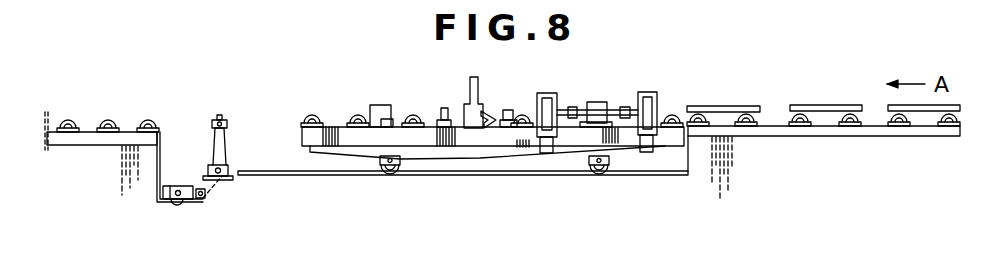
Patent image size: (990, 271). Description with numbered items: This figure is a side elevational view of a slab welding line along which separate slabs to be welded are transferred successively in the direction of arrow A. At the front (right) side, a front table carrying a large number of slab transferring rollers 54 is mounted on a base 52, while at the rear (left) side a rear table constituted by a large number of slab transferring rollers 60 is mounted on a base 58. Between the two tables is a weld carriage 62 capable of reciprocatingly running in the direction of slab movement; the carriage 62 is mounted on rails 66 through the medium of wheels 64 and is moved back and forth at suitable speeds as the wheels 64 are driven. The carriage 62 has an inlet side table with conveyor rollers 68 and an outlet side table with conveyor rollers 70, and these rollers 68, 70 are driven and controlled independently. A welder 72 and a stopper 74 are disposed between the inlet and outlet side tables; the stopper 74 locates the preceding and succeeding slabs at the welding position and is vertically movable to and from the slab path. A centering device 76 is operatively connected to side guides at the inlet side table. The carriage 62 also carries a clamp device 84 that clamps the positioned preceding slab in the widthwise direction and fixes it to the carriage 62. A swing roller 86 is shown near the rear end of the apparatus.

The base 52 is at (760, 135).
The slab transferring rollers 54 is at (702, 107).
The base 58 is at (122, 143).
The slab transferring rollers 60 is at (70, 121).
The weld carriage 62 is at (430, 156).
The wheels 64 is at (381, 172).
The rails 66 is at (297, 170).
The conveyor rollers 68 is at (527, 108).
The conveyor rollers 70 is at (313, 114).
The welder 72 is at (473, 96).
The stopper 74 is at (487, 113).
The centering device 76 is at (598, 102).
The clamp device 84 is at (378, 107).
The swing roller 86 is at (220, 115).